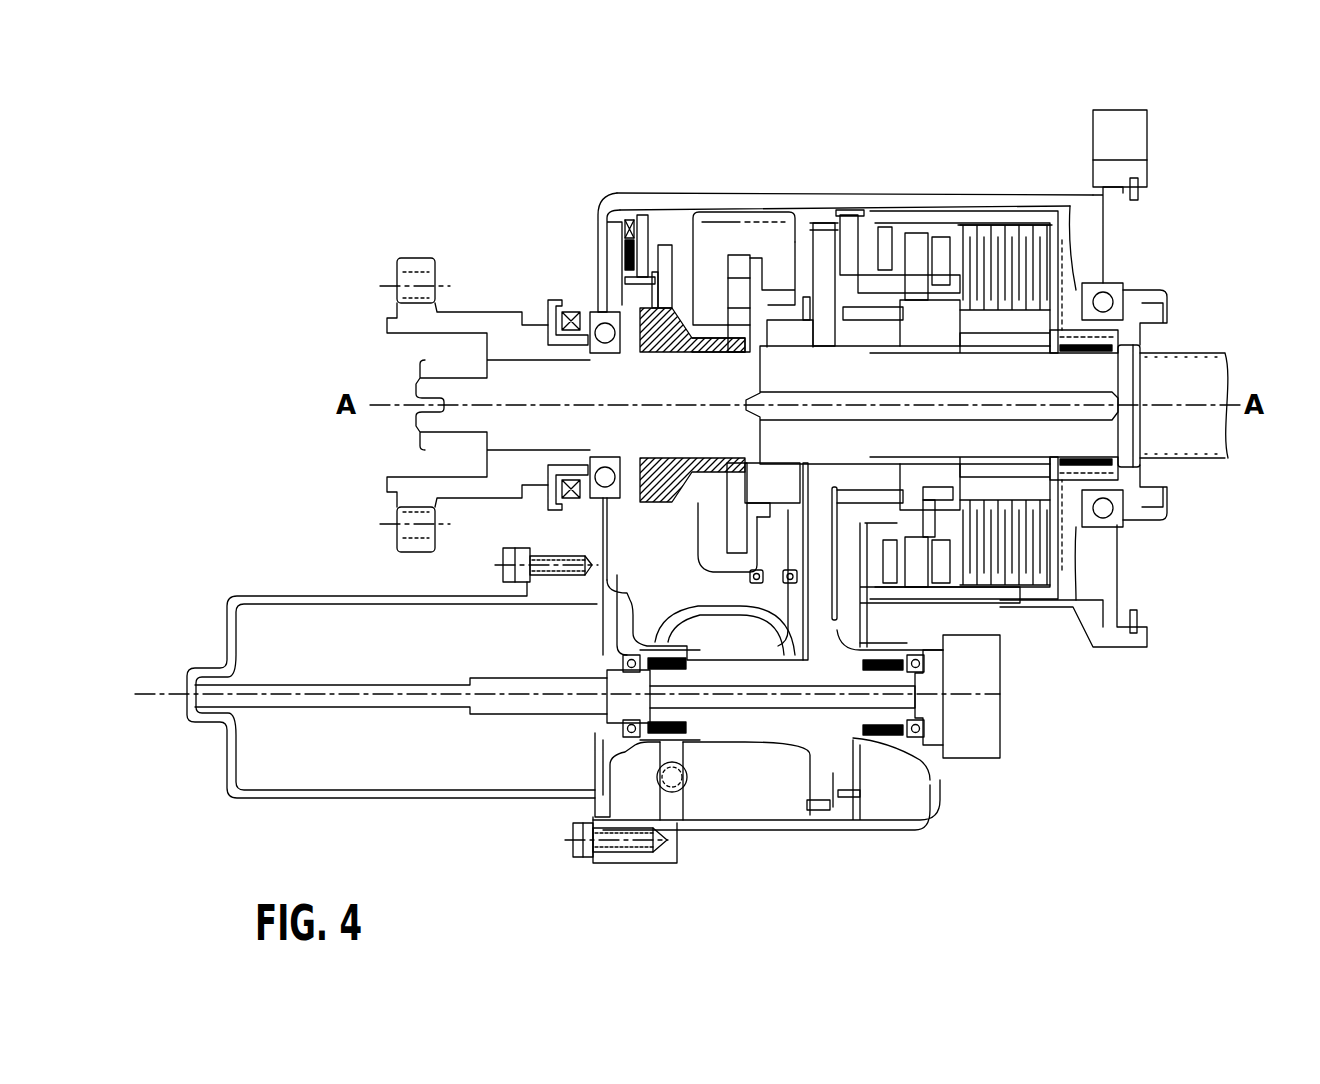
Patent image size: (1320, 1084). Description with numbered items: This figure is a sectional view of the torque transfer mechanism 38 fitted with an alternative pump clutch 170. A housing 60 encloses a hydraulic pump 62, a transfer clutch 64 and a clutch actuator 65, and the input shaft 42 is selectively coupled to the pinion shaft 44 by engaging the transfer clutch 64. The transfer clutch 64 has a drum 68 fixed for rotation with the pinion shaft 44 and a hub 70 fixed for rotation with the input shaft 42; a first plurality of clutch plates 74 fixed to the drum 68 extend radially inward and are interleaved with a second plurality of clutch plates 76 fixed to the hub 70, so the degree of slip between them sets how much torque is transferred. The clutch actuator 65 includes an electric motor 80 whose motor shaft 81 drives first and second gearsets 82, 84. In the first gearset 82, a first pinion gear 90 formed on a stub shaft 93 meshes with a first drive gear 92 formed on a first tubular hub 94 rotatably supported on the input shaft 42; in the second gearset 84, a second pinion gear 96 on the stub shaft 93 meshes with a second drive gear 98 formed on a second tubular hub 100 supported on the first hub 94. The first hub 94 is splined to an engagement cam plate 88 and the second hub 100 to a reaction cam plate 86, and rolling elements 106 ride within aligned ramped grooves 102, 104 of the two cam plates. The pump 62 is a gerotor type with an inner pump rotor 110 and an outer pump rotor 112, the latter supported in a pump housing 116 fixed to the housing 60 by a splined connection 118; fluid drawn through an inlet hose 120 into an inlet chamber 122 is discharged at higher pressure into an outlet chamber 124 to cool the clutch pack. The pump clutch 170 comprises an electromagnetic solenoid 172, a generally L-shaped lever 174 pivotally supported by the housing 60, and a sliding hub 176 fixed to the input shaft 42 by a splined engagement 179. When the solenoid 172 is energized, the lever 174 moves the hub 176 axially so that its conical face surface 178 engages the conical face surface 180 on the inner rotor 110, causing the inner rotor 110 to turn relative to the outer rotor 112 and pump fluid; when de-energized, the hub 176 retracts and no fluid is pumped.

The torque transfer mechanism 38 is at (1136, 698).
The input shaft 42 is at (418, 385).
The pinion shaft 44 is at (1228, 367).
The housing 60 is at (1067, 183).
The hydraulic pump 62 is at (764, 270).
The transfer clutch 64 is at (980, 225).
The clutch actuator 65 is at (700, 786).
The drum 68 is at (1070, 232).
The hub 70 is at (1100, 497).
The first plurality of clutch plates 74 is at (1070, 208).
The second plurality of clutch plates 76 is at (1052, 517).
The electric motor 80 is at (425, 800).
The motor shaft 81 is at (517, 682).
The first gearset 82 is at (806, 592).
The second gearset 84 is at (862, 600).
The reaction cam plate 86 is at (918, 258).
The engagement cam plate 88 is at (993, 220).
The first pinion gear 90 is at (820, 812).
The first drive gear 92 is at (821, 270).
The stub shaft 93 is at (760, 710).
The first tubular hub 94 is at (894, 333).
The second pinion gear 96 is at (855, 798).
The second drive gear 98 is at (849, 210).
The second tubular hub 100 is at (947, 325).
The ramped grooves 102 is at (933, 252).
The ramped grooves 104 is at (968, 233).
The rolling elements 106 is at (922, 247).
The inner pump rotor 110 is at (780, 333).
The outer pump rotor 112 is at (735, 258).
The pump housing 116 is at (782, 477).
The splined connection 118 is at (762, 217).
The inlet hose 120 is at (727, 624).
The inlet chamber 122 is at (760, 504).
The outlet chamber 124 is at (840, 318).
The pump clutch 170 is at (622, 294).
The electromagnetic solenoid 172 is at (627, 232).
The lever 174 is at (650, 228).
The sliding hub 176 is at (657, 352).
The conical face surface 178 is at (735, 352).
The splined engagement 179 is at (660, 458).
The conical face surface 180 is at (695, 336).